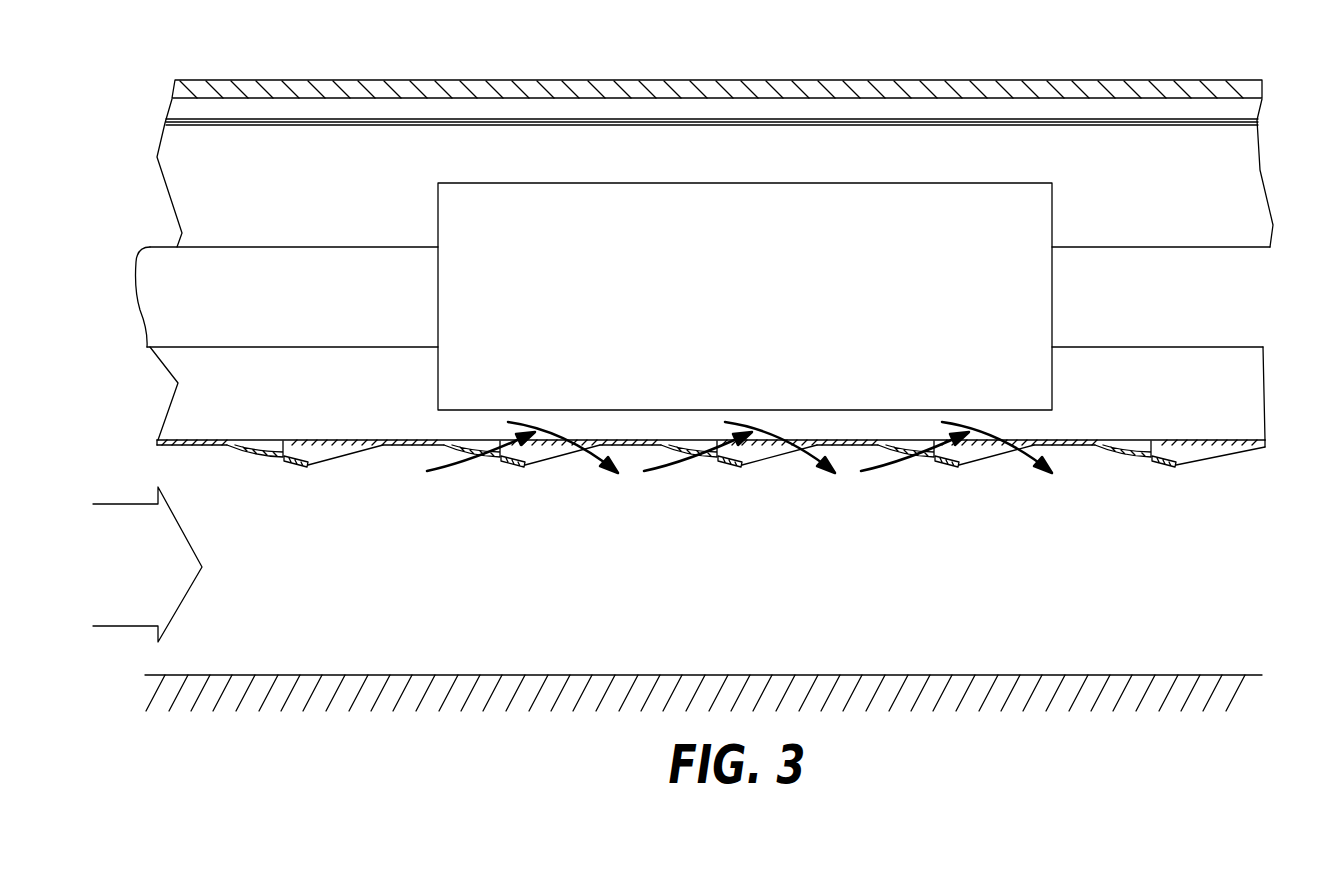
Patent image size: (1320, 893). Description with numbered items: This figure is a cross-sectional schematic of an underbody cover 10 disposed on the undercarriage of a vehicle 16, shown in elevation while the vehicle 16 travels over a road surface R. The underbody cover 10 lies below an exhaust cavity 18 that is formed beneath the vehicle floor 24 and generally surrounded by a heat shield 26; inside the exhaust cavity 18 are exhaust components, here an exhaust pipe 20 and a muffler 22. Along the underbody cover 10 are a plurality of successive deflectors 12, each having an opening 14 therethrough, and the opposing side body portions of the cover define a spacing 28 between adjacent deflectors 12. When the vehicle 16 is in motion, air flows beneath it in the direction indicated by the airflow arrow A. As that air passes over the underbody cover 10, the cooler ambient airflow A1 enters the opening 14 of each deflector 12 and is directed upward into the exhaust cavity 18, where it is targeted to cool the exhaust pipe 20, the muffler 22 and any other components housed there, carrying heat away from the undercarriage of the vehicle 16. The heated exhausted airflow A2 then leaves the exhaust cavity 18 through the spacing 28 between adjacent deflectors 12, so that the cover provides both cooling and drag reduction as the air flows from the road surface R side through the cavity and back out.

The underbody cover 10 is at (213, 446).
The deflector 12 is at (250, 450).
The opening 14 is at (290, 450).
The vehicle 16 is at (732, 225).
The exhaust cavity 18 is at (1242, 180).
The exhaust pipe 20 is at (362, 247).
The muffler 22 is at (652, 183).
The vehicle floor 24 is at (807, 80).
The heat shield 26 is at (837, 125).
The spacing 28 is at (343, 450).
The airflow arrow A is at (147, 564).
The ambient airflow A1 is at (698, 462).
The heated exhausted airflow A2 is at (780, 453).
The road surface R is at (837, 675).